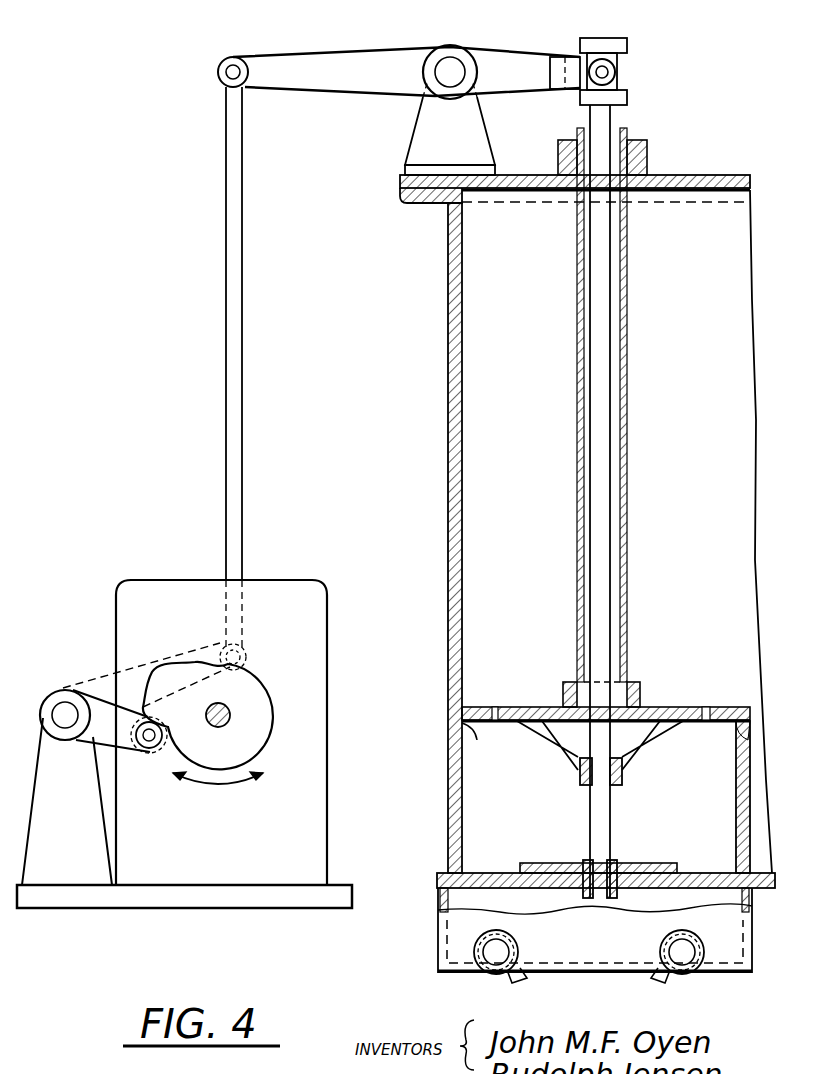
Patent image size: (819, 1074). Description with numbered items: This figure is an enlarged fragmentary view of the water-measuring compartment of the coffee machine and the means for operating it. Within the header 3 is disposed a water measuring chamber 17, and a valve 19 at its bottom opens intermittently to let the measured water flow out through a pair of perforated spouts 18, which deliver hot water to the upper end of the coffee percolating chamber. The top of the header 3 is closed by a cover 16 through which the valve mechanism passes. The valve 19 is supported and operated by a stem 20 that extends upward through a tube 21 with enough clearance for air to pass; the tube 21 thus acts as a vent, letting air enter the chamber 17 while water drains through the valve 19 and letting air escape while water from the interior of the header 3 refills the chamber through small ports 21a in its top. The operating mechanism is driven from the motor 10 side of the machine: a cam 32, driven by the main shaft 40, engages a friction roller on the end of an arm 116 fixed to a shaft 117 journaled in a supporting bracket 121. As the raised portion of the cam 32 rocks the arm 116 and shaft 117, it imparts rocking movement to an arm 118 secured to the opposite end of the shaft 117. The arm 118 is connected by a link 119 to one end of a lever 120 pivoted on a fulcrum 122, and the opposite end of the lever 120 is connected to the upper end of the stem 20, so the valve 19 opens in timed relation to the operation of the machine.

The lever 120 is at (158, 37).
The fulcrum 122 is at (420, 145).
The cover 16 is at (400, 183).
The link 119 is at (232, 245).
The header 3 is at (448, 308).
The tube 21 is at (577, 371).
The stem 20 is at (603, 428).
The water measuring chamber 17 is at (520, 705).
The ports 21a is at (705, 706).
The valve 19 is at (571, 863).
The perforated spouts 18 is at (437, 902).
The motor 10 is at (280, 593).
The cam 32 is at (253, 730).
The main shaft 40 is at (230, 712).
The arm 116 is at (98, 703).
The shaft 117 is at (65, 713).
The arm 118 is at (190, 657).
The supporting bracket 121 is at (62, 870).